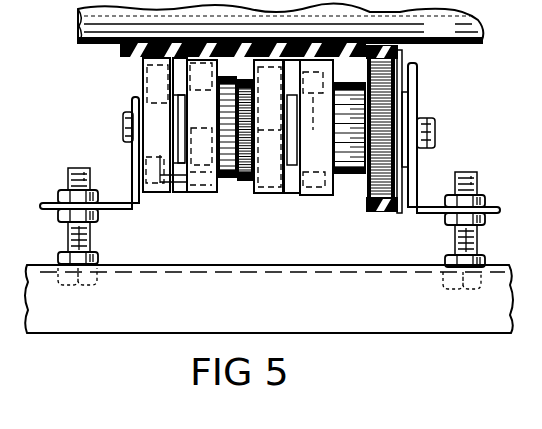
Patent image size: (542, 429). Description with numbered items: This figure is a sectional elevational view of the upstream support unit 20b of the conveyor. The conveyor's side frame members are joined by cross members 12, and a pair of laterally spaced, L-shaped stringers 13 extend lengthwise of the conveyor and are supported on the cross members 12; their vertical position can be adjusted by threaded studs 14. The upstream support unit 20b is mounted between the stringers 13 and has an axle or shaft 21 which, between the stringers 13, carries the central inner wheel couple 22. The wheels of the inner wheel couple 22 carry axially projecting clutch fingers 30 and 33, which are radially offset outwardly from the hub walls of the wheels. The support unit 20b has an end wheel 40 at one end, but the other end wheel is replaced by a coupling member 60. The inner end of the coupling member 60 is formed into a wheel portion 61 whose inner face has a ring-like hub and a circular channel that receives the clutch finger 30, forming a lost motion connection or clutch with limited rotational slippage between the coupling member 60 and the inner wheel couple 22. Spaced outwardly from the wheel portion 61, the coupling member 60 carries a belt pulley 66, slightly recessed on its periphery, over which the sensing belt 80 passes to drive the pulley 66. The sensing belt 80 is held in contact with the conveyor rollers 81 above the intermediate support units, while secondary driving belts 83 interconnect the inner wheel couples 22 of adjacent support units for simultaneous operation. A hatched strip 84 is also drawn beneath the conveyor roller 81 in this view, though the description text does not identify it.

The cross member 12 is at (359, 322).
The upstream support unit 20b is at (116, 345).
The L-shaped stringer 13 is at (53, 202).
The threaded stud 14 is at (91, 237).
The axle 21 is at (437, 131).
The inner wheel couple 22 is at (275, 202).
The clutch finger 30 is at (435, 30).
The clutch finger 33 is at (180, 193).
The end wheel 40 is at (152, 193).
The coupling member 60 is at (353, 186).
The wheel portion 61 is at (312, 196).
The belt pulley 66 is at (396, 53).
The sensing belt 80 is at (377, 208).
The conveyor roller 81 is at (468, 33).
The secondary driving belt 83 is at (227, 178).
The friction strip 84 is at (125, 47).